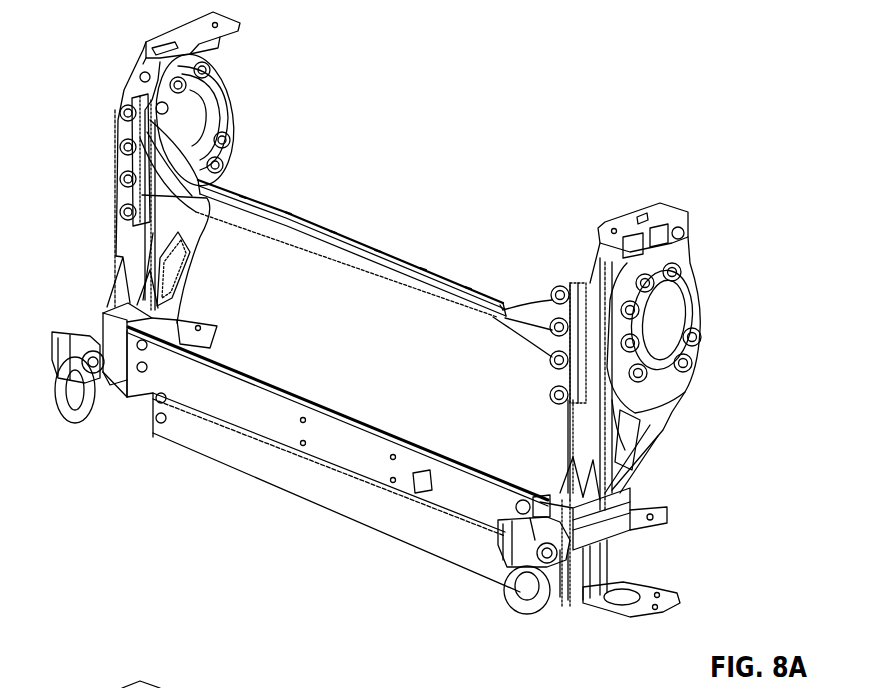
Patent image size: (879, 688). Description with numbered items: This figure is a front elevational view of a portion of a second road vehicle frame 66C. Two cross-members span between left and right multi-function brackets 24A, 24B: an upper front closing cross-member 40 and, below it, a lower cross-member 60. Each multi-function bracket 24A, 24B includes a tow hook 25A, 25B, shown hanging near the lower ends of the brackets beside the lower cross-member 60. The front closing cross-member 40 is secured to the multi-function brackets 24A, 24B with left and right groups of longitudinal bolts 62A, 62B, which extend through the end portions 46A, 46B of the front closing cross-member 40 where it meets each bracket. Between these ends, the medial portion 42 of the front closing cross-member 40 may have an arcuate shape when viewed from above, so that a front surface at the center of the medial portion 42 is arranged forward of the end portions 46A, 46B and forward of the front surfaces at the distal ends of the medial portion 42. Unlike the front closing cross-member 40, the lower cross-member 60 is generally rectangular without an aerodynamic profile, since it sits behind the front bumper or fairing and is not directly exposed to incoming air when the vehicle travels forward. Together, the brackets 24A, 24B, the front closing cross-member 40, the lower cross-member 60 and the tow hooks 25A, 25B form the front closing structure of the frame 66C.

The second road vehicle frame 66C is at (500, 150).
The multi-function bracket 24A is at (587, 425).
The multi-function bracket 24B is at (130, 240).
The tow hook 25A is at (543, 607).
The tow hook 25B is at (68, 418).
The front closing cross-member 40 is at (333, 258).
The medial portion 42 is at (378, 255).
The end portion 46A is at (560, 380).
The end portion 46B is at (132, 128).
The lower cross-member 60 is at (330, 425).
The longitudinal bolts 62A is at (557, 295).
The longitudinal bolts 62B is at (122, 148).